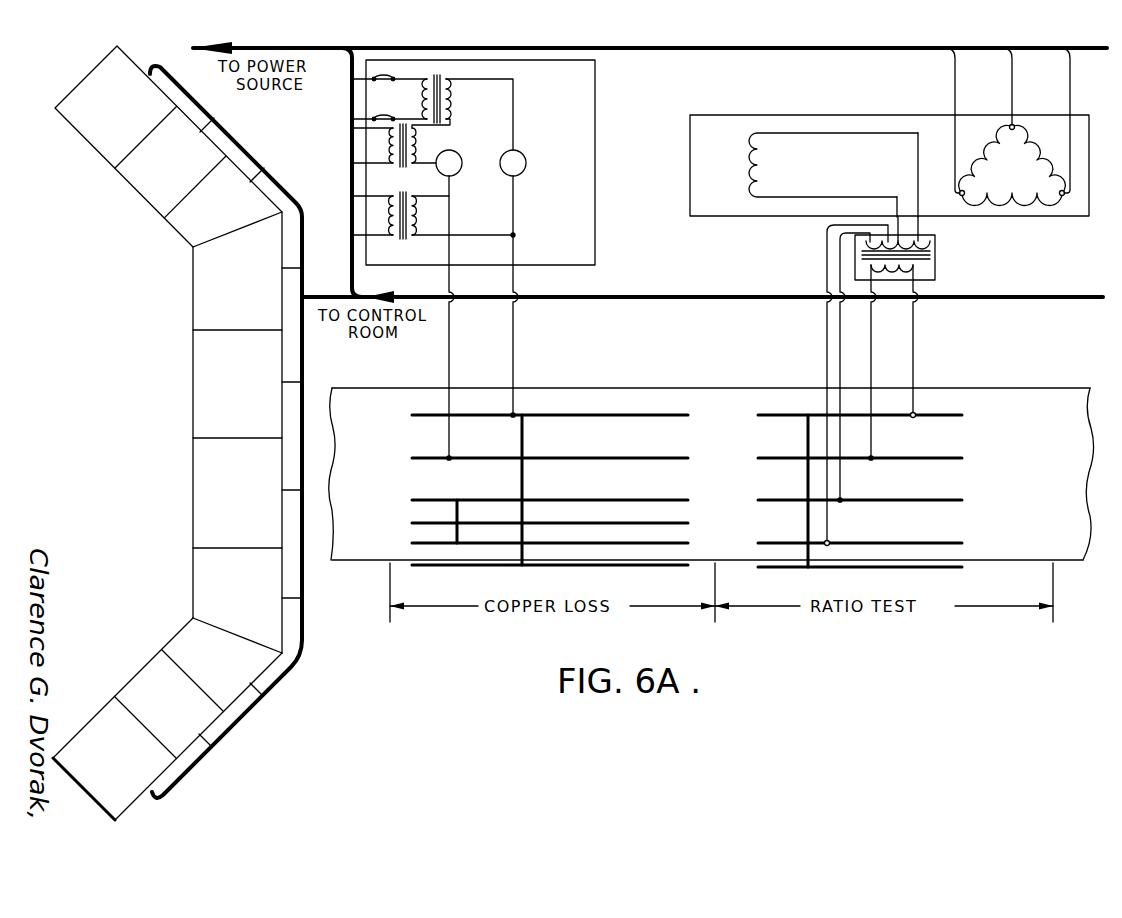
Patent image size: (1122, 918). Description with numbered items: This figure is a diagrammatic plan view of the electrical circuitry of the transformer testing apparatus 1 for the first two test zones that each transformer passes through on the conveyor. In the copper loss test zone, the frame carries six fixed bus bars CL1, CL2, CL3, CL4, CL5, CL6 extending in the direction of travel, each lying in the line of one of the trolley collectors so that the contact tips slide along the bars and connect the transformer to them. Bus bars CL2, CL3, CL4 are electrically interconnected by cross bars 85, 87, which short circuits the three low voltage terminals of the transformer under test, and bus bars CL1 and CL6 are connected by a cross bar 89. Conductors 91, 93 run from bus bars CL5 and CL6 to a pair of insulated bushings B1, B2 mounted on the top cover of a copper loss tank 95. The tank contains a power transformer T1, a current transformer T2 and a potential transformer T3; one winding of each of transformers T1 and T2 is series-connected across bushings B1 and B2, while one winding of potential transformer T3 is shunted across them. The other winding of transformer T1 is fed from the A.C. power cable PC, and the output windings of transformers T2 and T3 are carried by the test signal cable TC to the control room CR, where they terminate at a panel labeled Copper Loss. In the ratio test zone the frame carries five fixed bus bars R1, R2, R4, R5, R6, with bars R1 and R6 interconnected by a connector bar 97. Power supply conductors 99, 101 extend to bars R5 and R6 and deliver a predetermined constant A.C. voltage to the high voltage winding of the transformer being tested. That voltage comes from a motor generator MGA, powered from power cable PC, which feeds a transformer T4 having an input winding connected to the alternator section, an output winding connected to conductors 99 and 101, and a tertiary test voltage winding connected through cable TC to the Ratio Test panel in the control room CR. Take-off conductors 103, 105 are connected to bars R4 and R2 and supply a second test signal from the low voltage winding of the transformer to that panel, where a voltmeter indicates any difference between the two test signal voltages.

The test apparatus 1 is at (376, 388).
The cross bar 85 is at (458, 535).
The cross bar 87 is at (458, 512).
The cross bar 89 is at (523, 478).
The conductor 91 is at (448, 370).
The conductor 93 is at (514, 356).
The copper loss tank 95 is at (600, 134).
The connector bar 97 is at (807, 490).
The power supply conductor 99 is at (872, 345).
The power supply conductor 101 is at (914, 345).
The take-off conductor 103 is at (841, 346).
The take-off conductor 105 is at (826, 356).
The A.C. power cable PC is at (666, 49).
The test signal cable TC is at (632, 299).
The control room CR is at (178, 302).
The motor generator MGA is at (866, 112).
The power transformer T1 is at (447, 87).
The current transformer T2 is at (407, 160).
The potential transformer T3 is at (401, 237).
The transformer T4 is at (920, 257).
The insulated bushing B1 is at (459, 154).
The insulated bushing B2 is at (522, 154).
The copper loss bus bar CL1 is at (441, 567).
The copper loss bus bar CL2 is at (412, 543).
The copper loss bus bar CL3 is at (412, 523).
The copper loss bus bar CL4 is at (412, 500).
The copper loss bus bar CL5 is at (412, 458).
The copper loss bus bar CL6 is at (412, 416).
The ratio test bus bar R1 is at (768, 569).
The ratio test bus bar R2 is at (758, 543).
The ratio test bus bar R4 is at (758, 500).
The ratio test bus bar R5 is at (758, 458).
The ratio test bus bar R6 is at (758, 415).